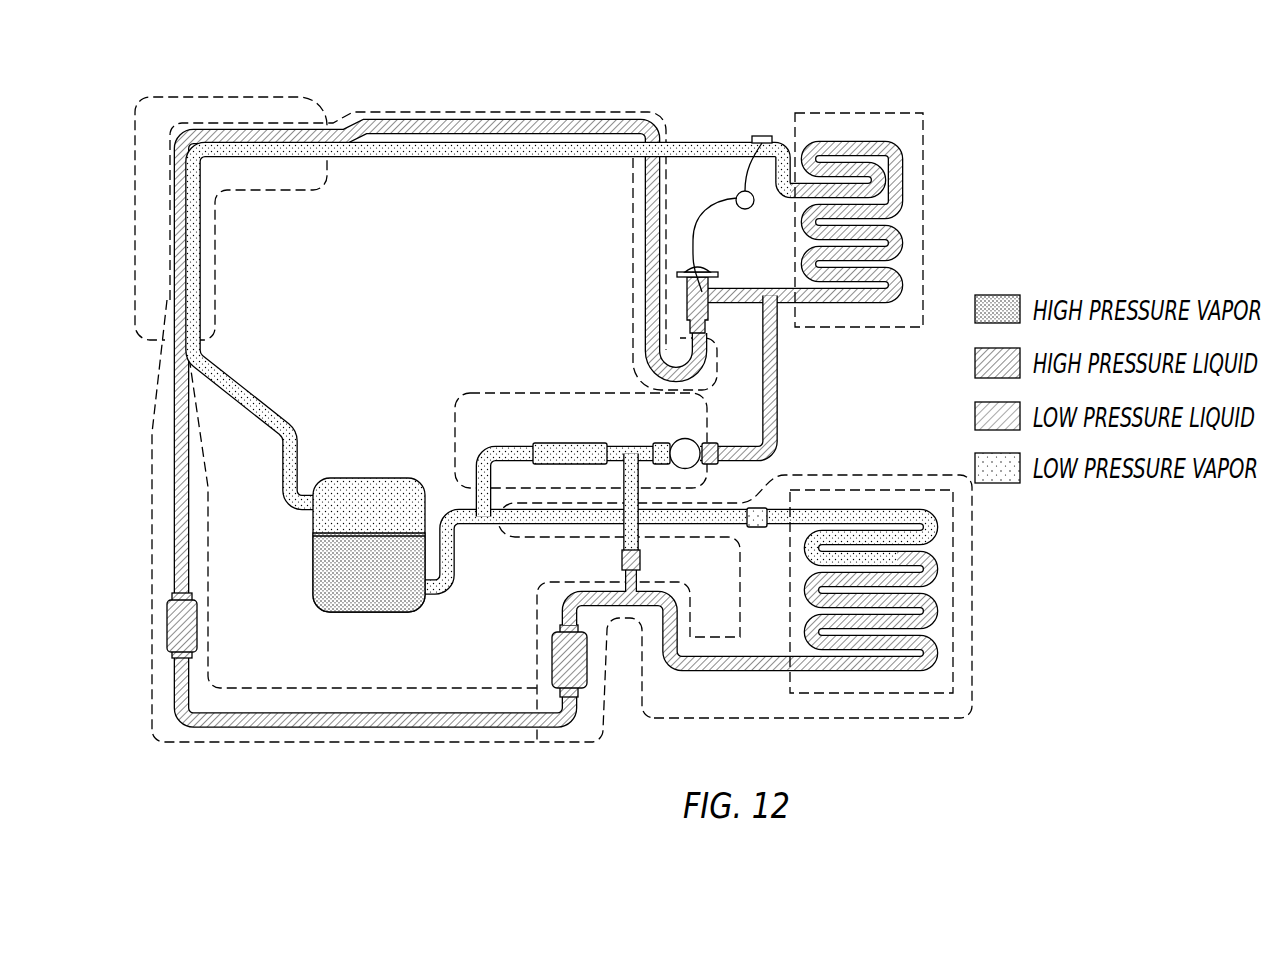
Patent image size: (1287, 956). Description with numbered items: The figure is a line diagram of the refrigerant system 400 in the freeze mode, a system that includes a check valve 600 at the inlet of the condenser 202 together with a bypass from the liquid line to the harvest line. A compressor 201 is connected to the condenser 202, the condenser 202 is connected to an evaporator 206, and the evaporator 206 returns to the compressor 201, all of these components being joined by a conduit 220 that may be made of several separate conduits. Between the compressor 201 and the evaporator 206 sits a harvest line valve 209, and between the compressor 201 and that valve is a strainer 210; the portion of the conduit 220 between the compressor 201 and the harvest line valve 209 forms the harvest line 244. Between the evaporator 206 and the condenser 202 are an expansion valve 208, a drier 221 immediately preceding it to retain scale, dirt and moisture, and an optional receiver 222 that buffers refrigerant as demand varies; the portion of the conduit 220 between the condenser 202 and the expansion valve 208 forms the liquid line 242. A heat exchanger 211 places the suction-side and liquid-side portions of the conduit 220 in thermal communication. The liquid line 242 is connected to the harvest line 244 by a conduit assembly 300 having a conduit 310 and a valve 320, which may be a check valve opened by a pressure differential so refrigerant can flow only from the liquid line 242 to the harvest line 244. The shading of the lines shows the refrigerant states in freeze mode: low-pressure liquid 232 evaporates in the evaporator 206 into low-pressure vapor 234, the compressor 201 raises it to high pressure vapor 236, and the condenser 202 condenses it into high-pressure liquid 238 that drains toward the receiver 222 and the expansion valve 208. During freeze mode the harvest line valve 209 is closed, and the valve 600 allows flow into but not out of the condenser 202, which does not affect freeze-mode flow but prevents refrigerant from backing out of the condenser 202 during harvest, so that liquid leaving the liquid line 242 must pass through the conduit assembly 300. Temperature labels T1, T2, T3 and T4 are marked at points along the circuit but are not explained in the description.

The refrigerant system 400 is at (674, 103).
The low-pressure vapor 234 is at (690, 141).
The temperature sensor T4 is at (735, 140).
The evaporator 206 is at (910, 132).
The low-pressure liquid 232 is at (895, 238).
The heat exchanger 211 is at (213, 250).
The expansion valve 208 is at (700, 258).
The temperature point T3 is at (787, 300).
The strainer 210 is at (550, 443).
The harvest line 244 is at (455, 428).
The harvest line valve 209 is at (693, 440).
The compressor 201 is at (395, 500).
The conduit assembly 300 is at (625, 470).
The conduit 310 is at (637, 473).
The valve 600 is at (765, 500).
The temperature point T2 is at (458, 528).
The valve 320 is at (643, 562).
The temperature point T1 is at (771, 660).
The high-pressure liquid 238 is at (937, 610).
The drier 221 is at (200, 626).
The high pressure vapor 236 is at (445, 592).
The receiver 222 is at (588, 660).
The condenser 202 is at (945, 675).
The liquid line 242 is at (255, 745).
The conduit 220 is at (415, 727).